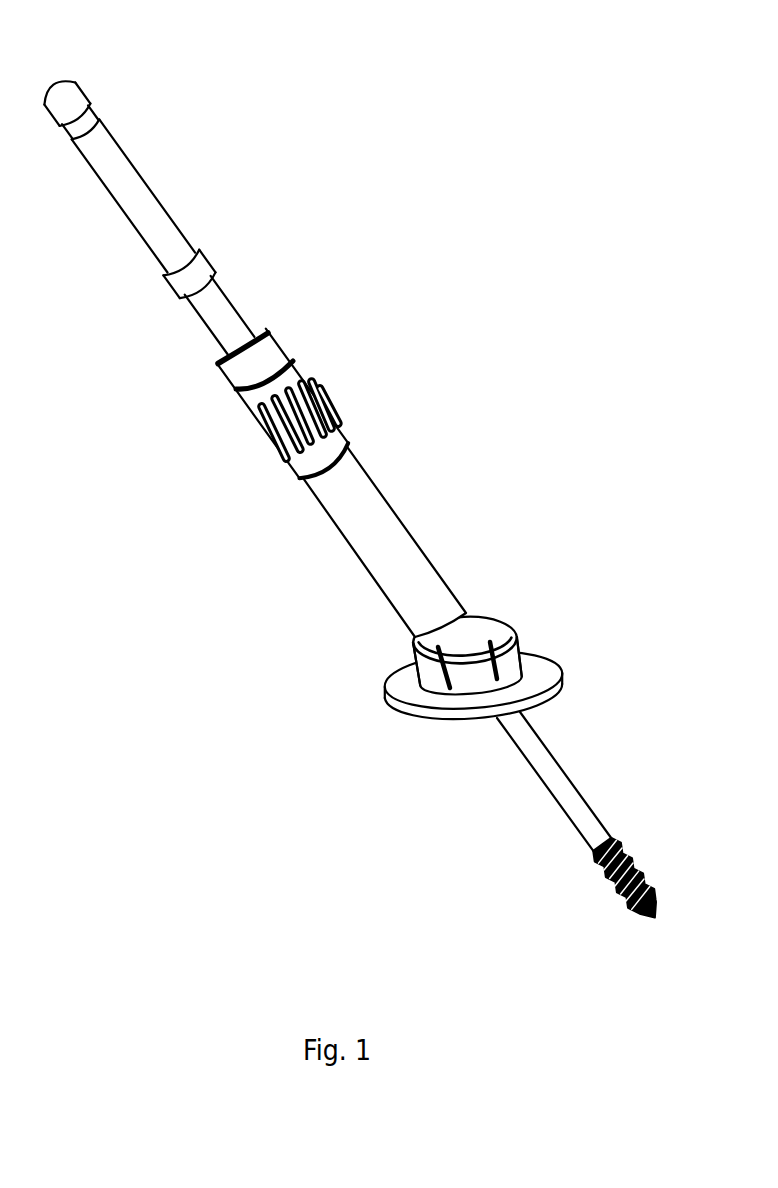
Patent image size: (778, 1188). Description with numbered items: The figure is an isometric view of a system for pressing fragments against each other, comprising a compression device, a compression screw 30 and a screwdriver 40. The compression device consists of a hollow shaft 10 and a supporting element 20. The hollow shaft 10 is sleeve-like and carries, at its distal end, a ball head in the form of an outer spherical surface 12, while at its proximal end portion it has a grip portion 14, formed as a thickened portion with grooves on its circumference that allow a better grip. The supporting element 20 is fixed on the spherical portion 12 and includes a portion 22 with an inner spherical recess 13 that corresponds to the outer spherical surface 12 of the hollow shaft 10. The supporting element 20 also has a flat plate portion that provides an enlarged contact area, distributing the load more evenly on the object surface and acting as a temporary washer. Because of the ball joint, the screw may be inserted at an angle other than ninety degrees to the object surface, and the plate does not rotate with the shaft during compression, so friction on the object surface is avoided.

The hollow shaft 10 is at (377, 538).
The outer spherical surface 12 is at (469, 633).
The inner spherical recess 13 is at (497, 640).
The grip portion 14 is at (310, 378).
The supporting element 20 is at (505, 690).
The portion 22 is at (426, 669).
The compression screw 30 is at (563, 785).
The screwdriver 40 is at (162, 227).